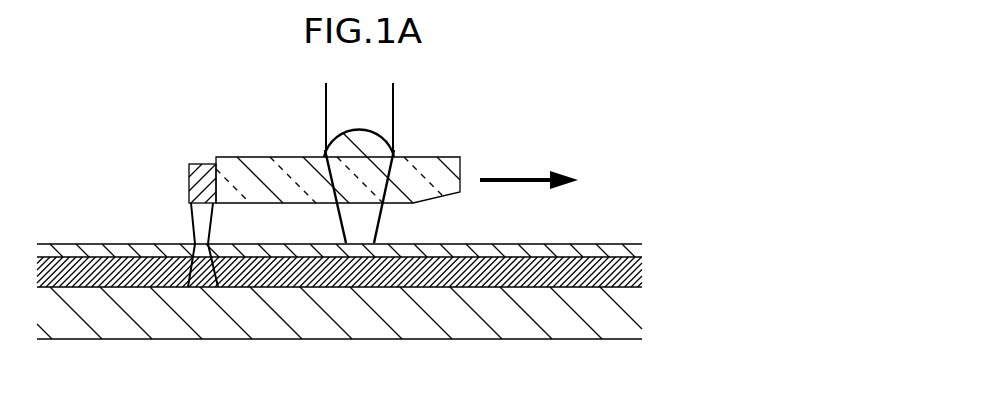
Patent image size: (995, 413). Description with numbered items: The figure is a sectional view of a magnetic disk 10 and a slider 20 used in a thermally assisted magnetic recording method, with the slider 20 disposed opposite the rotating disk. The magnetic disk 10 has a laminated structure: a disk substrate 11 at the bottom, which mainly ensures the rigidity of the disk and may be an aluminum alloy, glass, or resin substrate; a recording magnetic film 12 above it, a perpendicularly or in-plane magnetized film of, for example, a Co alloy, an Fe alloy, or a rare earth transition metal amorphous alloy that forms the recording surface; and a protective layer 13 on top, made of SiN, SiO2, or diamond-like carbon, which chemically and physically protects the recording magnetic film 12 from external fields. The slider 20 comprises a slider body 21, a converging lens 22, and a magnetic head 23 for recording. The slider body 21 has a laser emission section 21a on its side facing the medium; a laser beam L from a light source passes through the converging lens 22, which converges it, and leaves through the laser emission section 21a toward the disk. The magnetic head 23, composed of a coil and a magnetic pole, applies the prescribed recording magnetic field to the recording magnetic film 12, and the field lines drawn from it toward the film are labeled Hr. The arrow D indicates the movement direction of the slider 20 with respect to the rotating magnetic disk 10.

The magnetic disk 10 is at (365, 252).
The disk substrate 11 is at (637, 312).
The recording magnetic film 12 is at (642, 272).
The protective layer 13 is at (642, 251).
The slider 20 is at (290, 182).
The slider body 21 is at (338, 167).
The laser emission section 21a is at (362, 205).
The converging lens 22 is at (363, 135).
The magnetic head 23 is at (188, 178).
The arrow showing movement direction D is at (529, 164).
The laser beam L is at (381, 220).
The recording magnetic field Hr is at (192, 236).